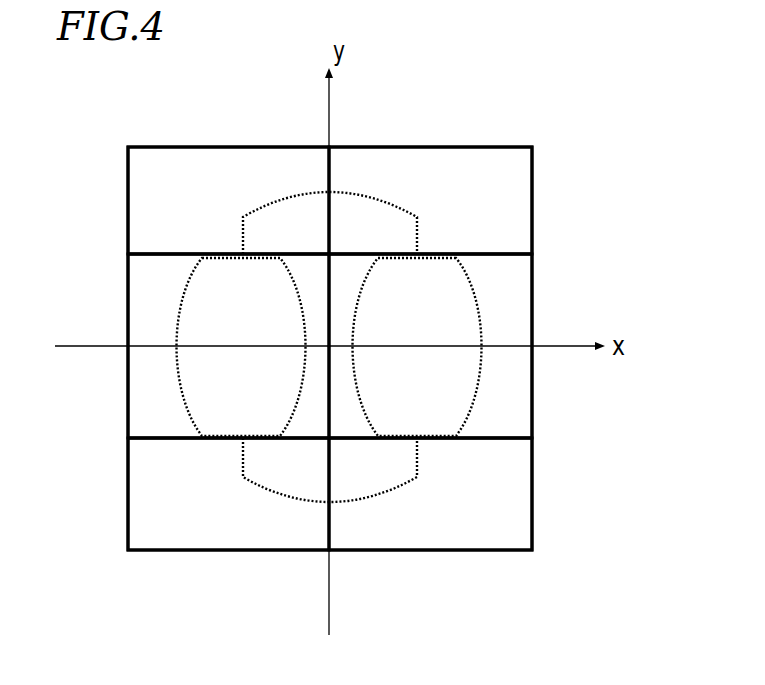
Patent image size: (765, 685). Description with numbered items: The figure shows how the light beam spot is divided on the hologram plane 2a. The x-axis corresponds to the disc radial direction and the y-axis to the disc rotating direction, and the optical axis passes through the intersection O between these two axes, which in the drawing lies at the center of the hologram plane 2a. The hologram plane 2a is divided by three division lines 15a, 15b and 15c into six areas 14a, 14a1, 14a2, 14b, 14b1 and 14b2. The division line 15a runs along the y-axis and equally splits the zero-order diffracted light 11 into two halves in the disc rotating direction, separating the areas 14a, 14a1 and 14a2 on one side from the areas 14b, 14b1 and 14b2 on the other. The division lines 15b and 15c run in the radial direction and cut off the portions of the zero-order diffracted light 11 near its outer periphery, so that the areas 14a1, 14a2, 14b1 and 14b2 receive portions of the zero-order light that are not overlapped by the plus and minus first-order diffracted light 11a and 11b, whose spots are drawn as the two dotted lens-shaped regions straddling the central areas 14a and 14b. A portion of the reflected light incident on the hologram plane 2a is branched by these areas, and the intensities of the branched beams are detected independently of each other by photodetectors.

The hologram plane 2a is at (545, 141).
The zero-order diffracted light 11 is at (273, 481).
The +first-order diffracted light 11a is at (471, 392).
The −first-order diffracted light 11b is at (186, 389).
The area 14a is at (517, 368).
The area 14a1 is at (473, 165).
The area 14a2 is at (467, 540).
The area 14b is at (138, 370).
The area 14b1 is at (186, 167).
The area 14b2 is at (168, 538).
The division line 15a is at (333, 165).
The division line 15b is at (145, 252).
The division line 15c is at (148, 440).
The intersection O is at (329, 346).